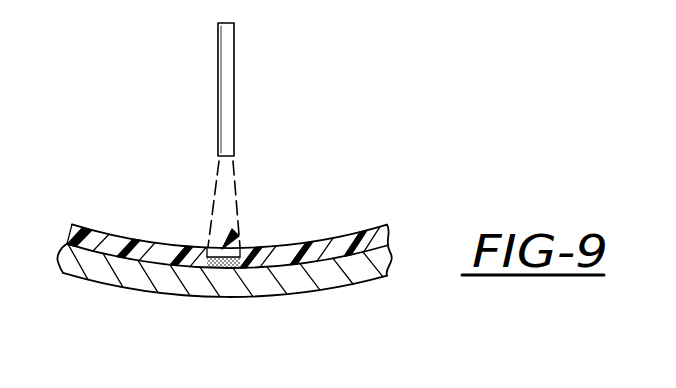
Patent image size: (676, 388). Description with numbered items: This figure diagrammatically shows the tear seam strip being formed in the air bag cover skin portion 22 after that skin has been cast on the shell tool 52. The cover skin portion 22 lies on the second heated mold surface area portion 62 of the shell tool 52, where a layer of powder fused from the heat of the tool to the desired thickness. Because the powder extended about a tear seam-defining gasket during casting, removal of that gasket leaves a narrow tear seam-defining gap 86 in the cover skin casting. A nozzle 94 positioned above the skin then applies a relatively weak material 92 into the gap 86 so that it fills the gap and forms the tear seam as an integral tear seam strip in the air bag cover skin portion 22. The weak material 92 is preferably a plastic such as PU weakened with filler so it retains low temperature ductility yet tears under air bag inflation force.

The nozzle 94 is at (235, 106).
The relatively weak material 92 is at (210, 207).
The tear seam-defining gap 86 is at (234, 232).
The air bag cover skin portion 22 is at (334, 238).
The second heated mold surface area portion 62 is at (381, 228).
The shell tool 52 is at (142, 291).